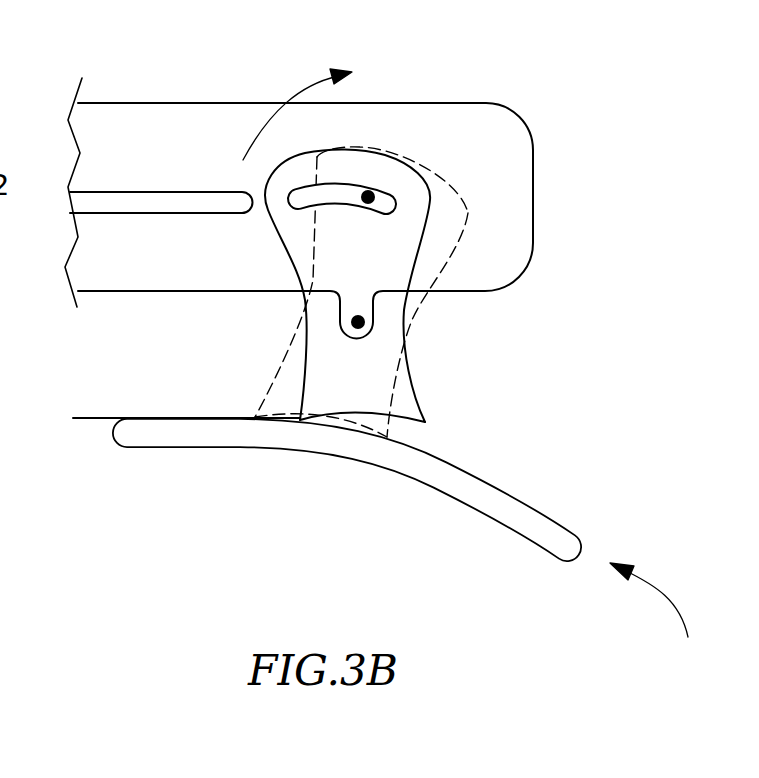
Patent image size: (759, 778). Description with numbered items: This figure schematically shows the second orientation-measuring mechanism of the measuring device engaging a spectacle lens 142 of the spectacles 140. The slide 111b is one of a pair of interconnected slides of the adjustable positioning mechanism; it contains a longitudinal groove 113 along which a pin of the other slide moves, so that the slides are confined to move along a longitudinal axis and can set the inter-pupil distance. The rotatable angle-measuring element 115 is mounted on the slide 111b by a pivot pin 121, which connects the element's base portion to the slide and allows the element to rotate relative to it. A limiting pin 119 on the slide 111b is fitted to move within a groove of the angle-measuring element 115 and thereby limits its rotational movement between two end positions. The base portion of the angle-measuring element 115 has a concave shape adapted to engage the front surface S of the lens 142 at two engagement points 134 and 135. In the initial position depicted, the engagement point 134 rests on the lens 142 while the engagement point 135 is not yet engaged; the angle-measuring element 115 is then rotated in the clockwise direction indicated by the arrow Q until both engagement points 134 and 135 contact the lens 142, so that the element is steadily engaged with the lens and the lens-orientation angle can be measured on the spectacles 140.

The slide 111b is at (225, 127).
The longitudinal groove 113 is at (78, 199).
The angle-measuring element 115 is at (387, 243).
The limiting pin 119 is at (367, 192).
The pivot pin 121 is at (362, 318).
The engagement point 134 is at (298, 420).
The engagement point 135 is at (425, 421).
The spectacles 140 is at (660, 620).
The spectacle lens 142 is at (192, 432).
The frame front surface S is at (125, 417).
The arrow indicating clockwise rotation Q is at (295, 114).